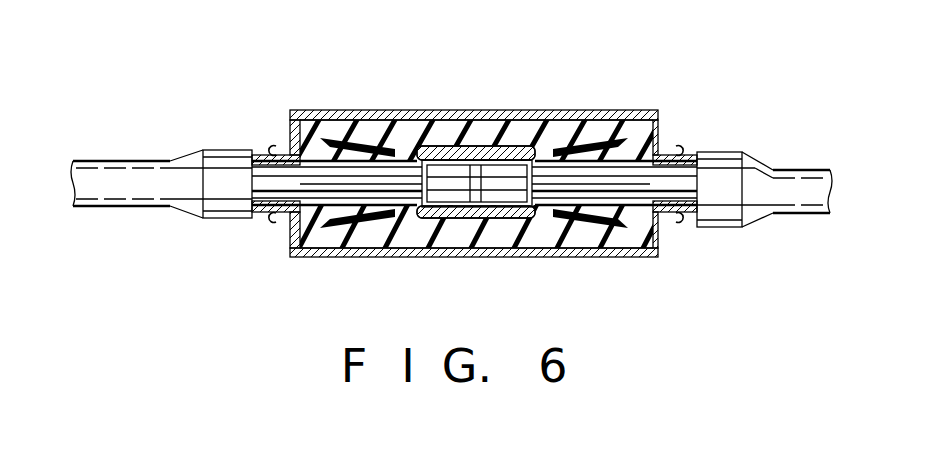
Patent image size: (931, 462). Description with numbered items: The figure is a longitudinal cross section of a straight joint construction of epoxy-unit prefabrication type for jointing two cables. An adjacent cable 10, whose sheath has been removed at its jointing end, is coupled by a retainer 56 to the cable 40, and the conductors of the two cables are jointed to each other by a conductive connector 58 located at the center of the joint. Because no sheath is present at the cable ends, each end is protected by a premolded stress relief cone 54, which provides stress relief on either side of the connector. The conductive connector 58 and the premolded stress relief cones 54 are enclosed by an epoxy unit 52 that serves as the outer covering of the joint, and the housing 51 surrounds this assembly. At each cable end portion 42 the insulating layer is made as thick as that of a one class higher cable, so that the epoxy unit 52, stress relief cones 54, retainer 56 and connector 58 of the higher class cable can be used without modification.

The cable 10 is at (108, 152).
The cable 40 is at (796, 160).
The cable end portion 42 is at (222, 165).
The housing 51 is at (461, 110).
The epoxy unit 52 is at (401, 133).
The premolded stress relief cone 54 is at (320, 145).
The retainer 56 is at (508, 207).
The conductive connector 58 is at (453, 218).